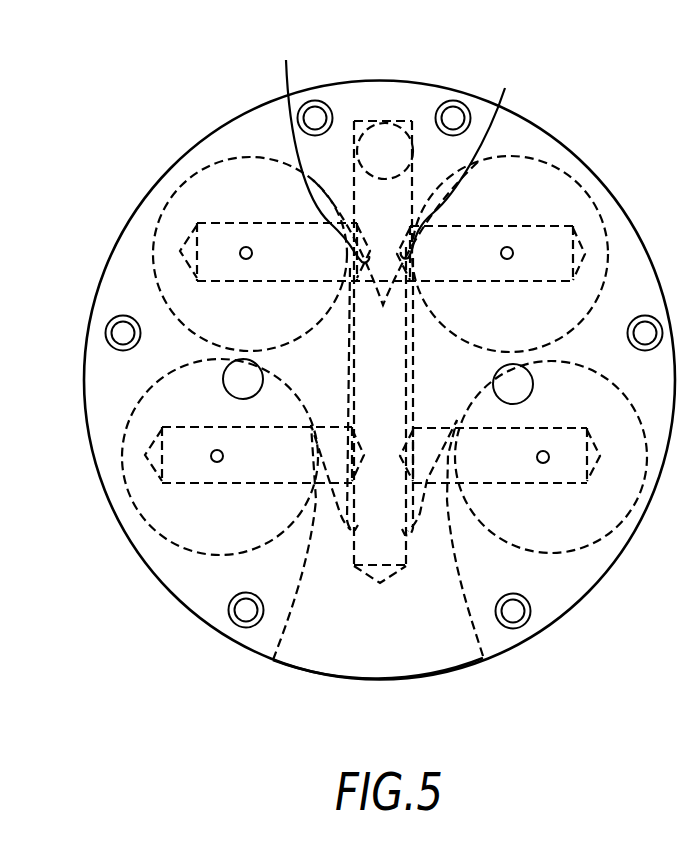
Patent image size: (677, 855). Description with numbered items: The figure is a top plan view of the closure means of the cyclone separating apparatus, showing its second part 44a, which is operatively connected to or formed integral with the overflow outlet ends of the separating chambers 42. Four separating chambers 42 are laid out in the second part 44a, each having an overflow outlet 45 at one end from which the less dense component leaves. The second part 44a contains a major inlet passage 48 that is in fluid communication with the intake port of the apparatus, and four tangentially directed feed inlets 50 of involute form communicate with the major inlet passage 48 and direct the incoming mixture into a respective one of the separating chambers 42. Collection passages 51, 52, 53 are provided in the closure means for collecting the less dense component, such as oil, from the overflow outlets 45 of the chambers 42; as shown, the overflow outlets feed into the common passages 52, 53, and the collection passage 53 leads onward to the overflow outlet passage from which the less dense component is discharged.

The second part 44a is at (168, 174).
The chambers 42 is at (260, 333).
The overflow outlet 45 is at (246, 247).
The major inlet passage 48 is at (392, 650).
The feed inlets 50 is at (427, 572).
The collection passage 51 is at (297, 268).
The collection passage 52 is at (392, 372).
The collection passage 53 is at (387, 148).